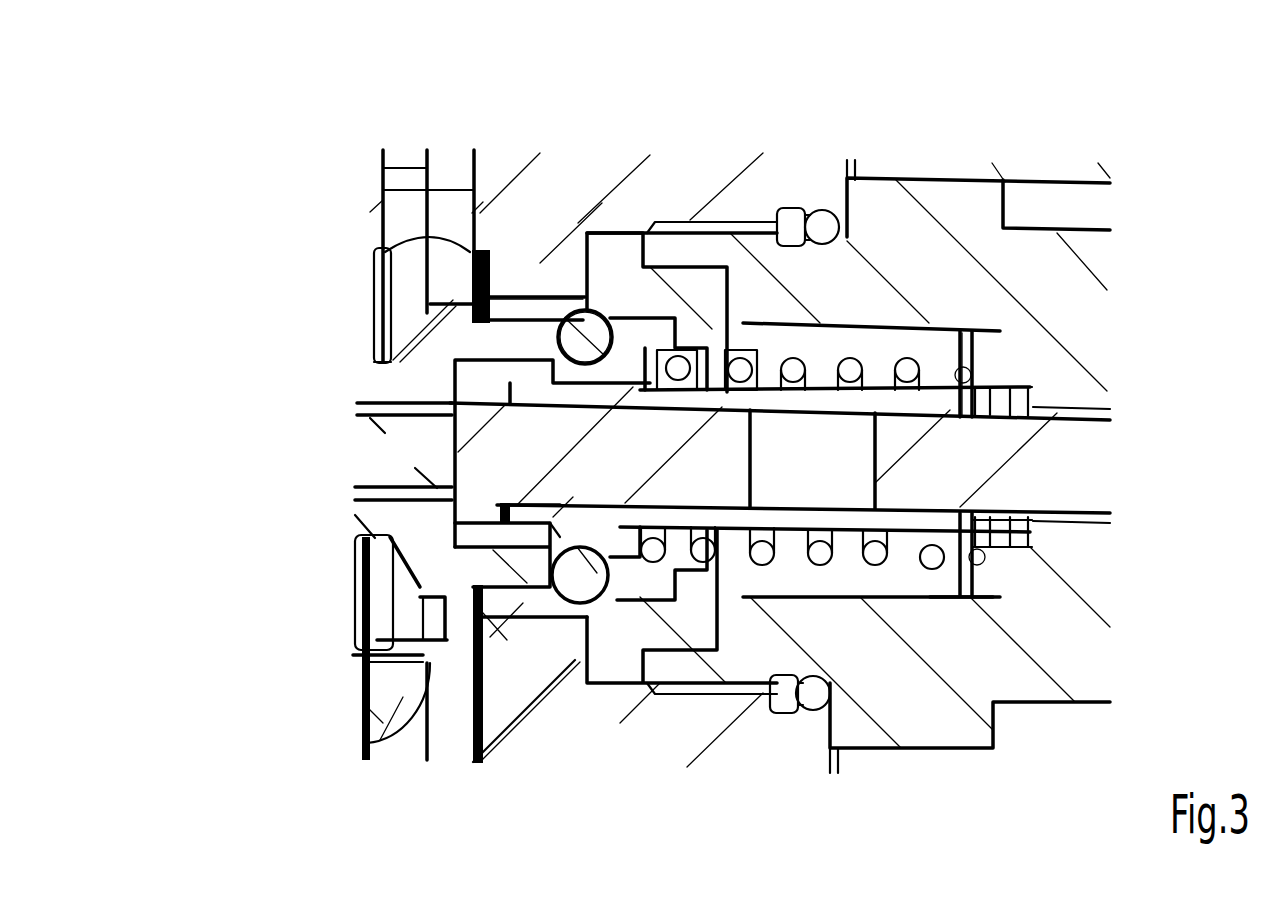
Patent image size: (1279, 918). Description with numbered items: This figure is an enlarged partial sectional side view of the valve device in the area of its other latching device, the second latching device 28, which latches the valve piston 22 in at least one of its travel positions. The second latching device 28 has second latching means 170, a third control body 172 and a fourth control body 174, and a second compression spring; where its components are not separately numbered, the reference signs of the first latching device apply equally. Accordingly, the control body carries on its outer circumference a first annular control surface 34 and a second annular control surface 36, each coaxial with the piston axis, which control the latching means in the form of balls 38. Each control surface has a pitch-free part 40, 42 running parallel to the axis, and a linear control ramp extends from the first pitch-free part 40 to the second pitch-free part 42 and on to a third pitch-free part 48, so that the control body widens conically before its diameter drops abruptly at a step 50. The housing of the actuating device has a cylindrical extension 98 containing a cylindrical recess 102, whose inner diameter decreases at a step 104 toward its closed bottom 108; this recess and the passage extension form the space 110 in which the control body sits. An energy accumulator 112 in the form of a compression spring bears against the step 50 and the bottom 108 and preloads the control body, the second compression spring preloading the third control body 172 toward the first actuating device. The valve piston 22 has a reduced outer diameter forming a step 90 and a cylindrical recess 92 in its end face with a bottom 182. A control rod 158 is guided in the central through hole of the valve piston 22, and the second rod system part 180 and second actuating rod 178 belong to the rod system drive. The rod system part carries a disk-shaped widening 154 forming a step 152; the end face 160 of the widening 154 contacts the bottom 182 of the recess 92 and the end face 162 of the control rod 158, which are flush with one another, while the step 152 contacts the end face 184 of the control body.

The valve piston 22 is at (455, 333).
The second latching device 28 is at (743, 763).
The first annular control surface 34 is at (563, 358).
The second annular control surface 36 is at (605, 315).
The balls 38 is at (585, 337).
The first pitch-free control surface part 40 is at (530, 527).
The second pitch-free control surface part 42 is at (585, 610).
The third pitch-free part 48 is at (622, 572).
The step 50 is at (660, 345).
The step 90 is at (505, 600).
The cylindrical recess 92 is at (470, 573).
The cylindrical extension 98 is at (824, 283).
The cylindrical recess 102 is at (860, 583).
The step 104 is at (705, 590).
The bottom 108 is at (993, 553).
The space 110 is at (823, 563).
The energy accumulator 112 is at (963, 358).
The step 152 is at (513, 517).
The widening 154 is at (460, 393).
The control rod 158 is at (430, 462).
The end face 160 is at (460, 477).
The end face 162 is at (403, 512).
The second latching means 170 is at (574, 312).
The third control body 172 is at (822, 398).
The fourth control body 174 is at (705, 300).
The second actuating rod 178 is at (1078, 488).
The second rod system part 180 is at (733, 486).
The bottom 182 is at (452, 527).
The end face 184 is at (457, 388).